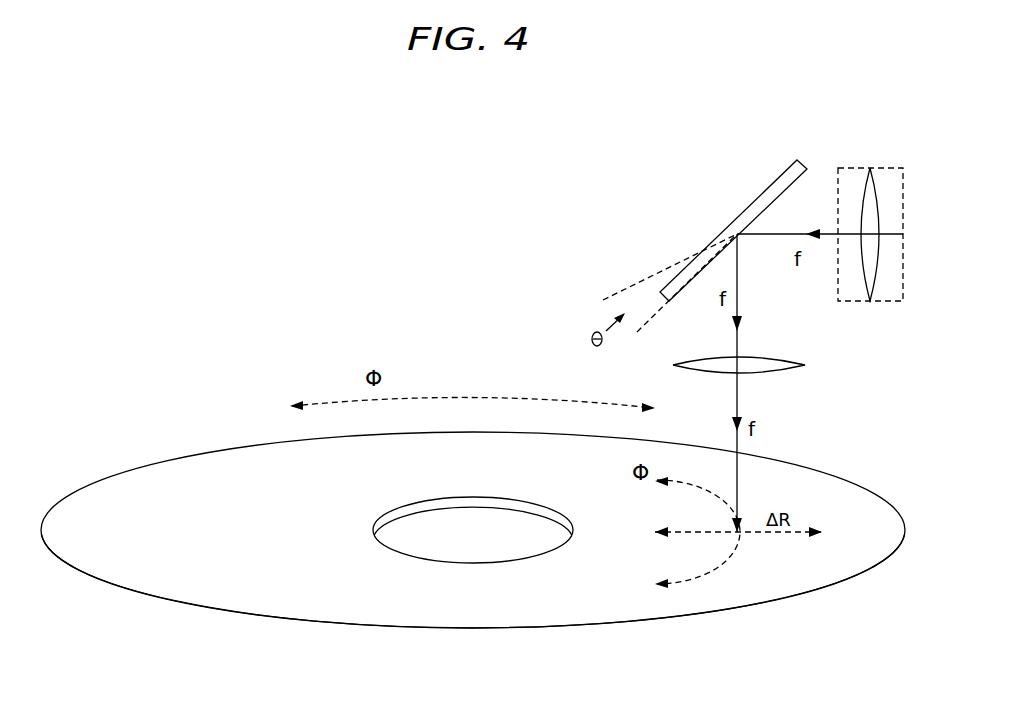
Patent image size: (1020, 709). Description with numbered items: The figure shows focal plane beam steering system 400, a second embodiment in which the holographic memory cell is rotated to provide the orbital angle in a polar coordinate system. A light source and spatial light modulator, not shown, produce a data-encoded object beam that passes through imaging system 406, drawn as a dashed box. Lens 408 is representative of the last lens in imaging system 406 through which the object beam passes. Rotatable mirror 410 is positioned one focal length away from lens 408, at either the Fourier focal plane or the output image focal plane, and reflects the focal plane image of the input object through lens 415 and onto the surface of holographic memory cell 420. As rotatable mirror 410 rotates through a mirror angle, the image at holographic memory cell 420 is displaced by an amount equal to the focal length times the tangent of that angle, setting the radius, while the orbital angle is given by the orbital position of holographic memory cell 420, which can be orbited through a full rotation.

The focal plane beam steering system 400 is at (176, 180).
The imaging system 406 is at (885, 168).
The lens 408 is at (870, 301).
The rotatable mirror 410 is at (776, 178).
The lens 415 is at (805, 365).
The holographic memory cell 420 is at (283, 625).